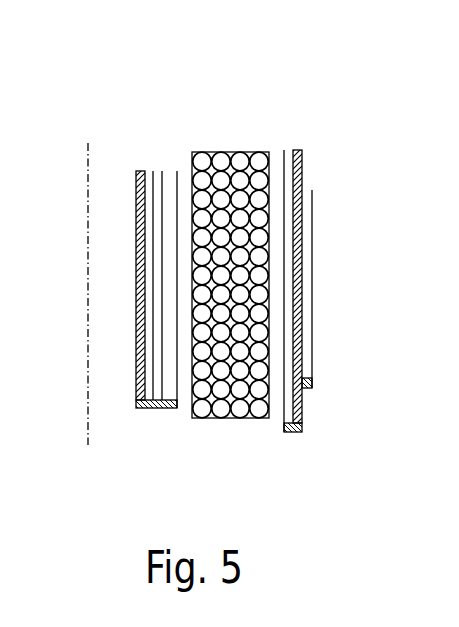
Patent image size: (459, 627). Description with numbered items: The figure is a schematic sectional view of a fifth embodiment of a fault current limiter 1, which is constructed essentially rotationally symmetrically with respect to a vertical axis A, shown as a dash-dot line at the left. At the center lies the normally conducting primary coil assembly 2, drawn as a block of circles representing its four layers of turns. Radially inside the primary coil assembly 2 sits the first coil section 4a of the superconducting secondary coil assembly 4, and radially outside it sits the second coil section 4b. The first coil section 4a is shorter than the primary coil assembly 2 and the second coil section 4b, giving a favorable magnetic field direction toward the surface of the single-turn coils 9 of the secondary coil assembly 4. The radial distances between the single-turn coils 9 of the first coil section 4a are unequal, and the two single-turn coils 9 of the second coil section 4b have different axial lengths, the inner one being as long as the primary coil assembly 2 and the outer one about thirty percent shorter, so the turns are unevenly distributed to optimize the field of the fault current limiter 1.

The fault current limiter 1 is at (348, 114).
The primary coil assembly 2 is at (220, 384).
The secondary coil assembly 4 is at (172, 369).
The first coil section 4a is at (160, 150).
The second coil section 4b is at (293, 132).
The single-turn coil 9 is at (284, 167).
The vertical axis A is at (87, 242).